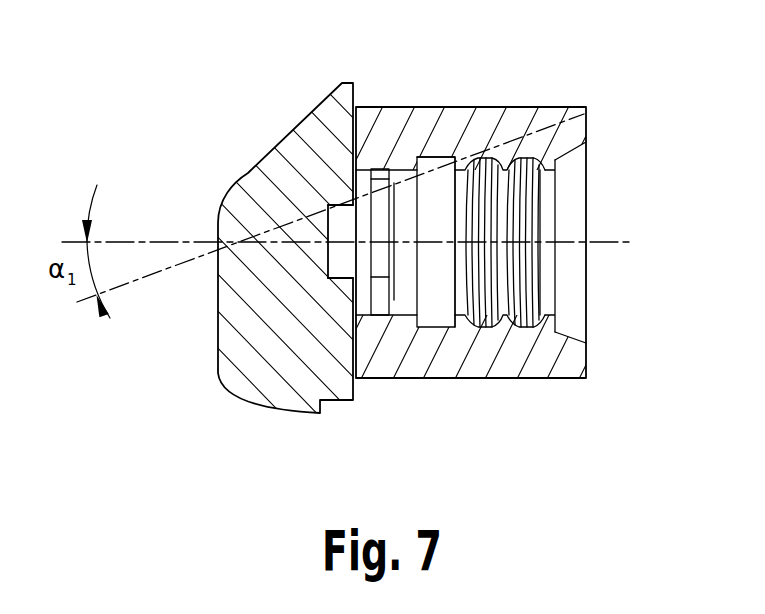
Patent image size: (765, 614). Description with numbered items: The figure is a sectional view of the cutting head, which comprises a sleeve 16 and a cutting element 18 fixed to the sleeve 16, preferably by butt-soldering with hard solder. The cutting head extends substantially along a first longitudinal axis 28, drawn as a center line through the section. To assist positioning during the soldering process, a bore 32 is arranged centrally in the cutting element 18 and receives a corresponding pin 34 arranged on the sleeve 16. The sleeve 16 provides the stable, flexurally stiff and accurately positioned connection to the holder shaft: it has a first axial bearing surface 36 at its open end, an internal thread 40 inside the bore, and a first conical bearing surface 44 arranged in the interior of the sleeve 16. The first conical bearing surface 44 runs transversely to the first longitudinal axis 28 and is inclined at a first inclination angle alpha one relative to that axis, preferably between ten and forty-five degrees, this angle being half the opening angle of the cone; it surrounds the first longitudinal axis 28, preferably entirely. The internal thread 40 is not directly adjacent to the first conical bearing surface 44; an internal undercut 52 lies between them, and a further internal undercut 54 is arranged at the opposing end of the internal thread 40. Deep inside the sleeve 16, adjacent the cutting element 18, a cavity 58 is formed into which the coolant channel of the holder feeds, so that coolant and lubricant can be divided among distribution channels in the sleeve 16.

The sleeve 16 is at (556, 353).
The cutting element 18 is at (258, 356).
The first longitudinal axis 28 is at (625, 243).
The bore 32 is at (326, 276).
The pin 34 is at (326, 207).
The first axial bearing surface 36 is at (590, 121).
The internal thread 40 is at (515, 318).
The first conical bearing surface 44 is at (420, 294).
The internal undercut 52 is at (433, 187).
The internal undercut 54 is at (540, 180).
The cavity 58 is at (383, 316).